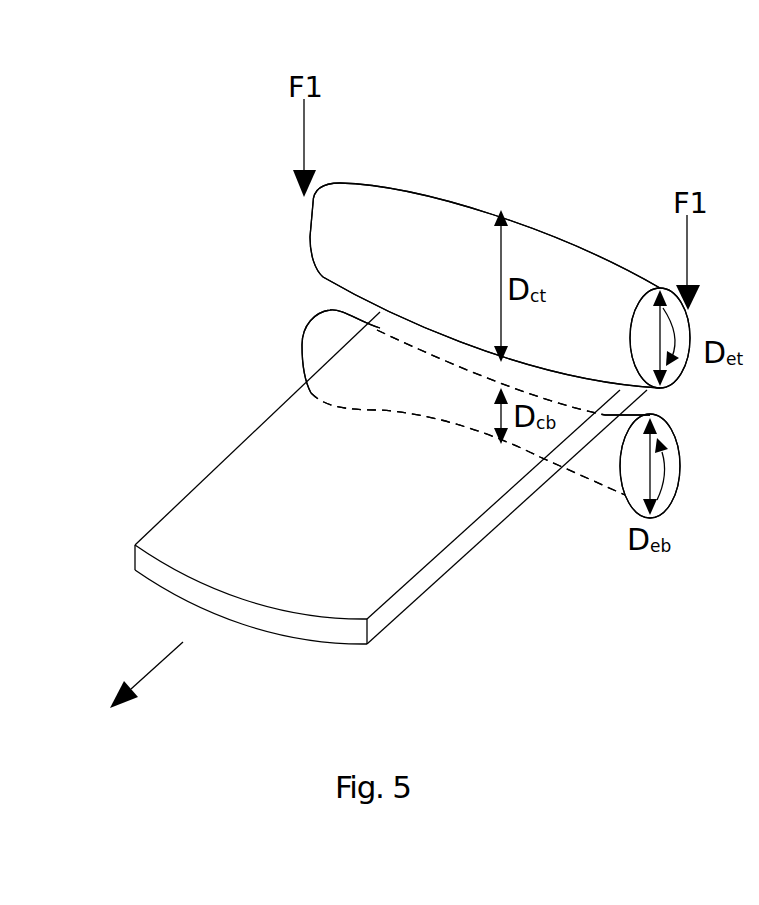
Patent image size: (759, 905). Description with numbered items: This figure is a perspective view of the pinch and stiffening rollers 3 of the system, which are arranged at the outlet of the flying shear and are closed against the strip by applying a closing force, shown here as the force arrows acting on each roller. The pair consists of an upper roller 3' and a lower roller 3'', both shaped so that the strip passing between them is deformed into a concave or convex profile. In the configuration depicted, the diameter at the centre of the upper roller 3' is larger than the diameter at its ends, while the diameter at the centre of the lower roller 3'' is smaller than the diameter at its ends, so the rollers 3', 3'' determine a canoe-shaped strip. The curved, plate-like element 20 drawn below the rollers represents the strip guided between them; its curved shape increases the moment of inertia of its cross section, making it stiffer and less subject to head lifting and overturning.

The pinch and stiffening rollers 3 is at (496, 263).
The upper roller 3' is at (500, 231).
The lower roller 3'' is at (409, 414).
The plate / substrate 20 is at (412, 588).